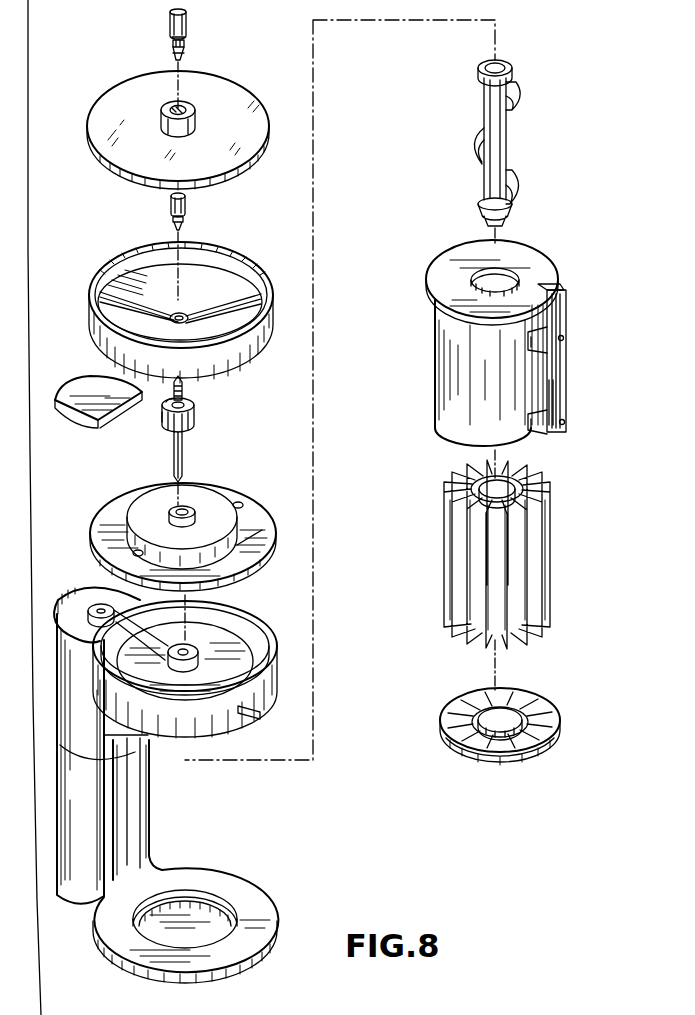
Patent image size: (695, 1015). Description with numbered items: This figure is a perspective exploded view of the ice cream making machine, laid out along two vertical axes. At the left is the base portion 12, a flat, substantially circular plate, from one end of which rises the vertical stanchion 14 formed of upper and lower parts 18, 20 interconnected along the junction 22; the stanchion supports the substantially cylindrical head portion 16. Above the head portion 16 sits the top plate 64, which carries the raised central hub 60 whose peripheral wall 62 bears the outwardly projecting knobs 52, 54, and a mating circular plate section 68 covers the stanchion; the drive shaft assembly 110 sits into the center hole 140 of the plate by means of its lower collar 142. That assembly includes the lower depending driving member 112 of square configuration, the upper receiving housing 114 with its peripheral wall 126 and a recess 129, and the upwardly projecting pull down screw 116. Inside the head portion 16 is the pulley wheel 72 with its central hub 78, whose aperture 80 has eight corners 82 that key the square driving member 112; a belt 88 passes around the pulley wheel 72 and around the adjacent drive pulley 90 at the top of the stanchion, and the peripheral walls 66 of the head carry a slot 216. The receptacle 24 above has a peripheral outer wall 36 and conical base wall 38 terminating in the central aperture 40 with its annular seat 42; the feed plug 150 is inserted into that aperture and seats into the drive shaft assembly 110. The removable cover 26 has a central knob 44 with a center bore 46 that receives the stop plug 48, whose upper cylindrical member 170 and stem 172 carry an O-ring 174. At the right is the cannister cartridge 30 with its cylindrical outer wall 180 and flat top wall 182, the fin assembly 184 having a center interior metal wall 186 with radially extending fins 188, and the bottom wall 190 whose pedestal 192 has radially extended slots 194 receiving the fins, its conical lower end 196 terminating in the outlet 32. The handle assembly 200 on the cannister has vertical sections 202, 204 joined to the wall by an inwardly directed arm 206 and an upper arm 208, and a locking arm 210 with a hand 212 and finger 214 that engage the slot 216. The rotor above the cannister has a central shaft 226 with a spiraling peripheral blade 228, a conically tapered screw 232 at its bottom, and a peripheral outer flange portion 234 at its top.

The base portion 12 is at (226, 887).
The vertical stanchion 14 is at (158, 798).
The head portion 16 is at (176, 661).
The upper part of stanchion 18 is at (132, 742).
The lower part of stanchion 20 is at (142, 800).
The junction 22 is at (140, 768).
The receptacle 24 is at (199, 302).
The removable cover 26 is at (191, 121).
The cannister cartridge 30 is at (501, 334).
The outlet 32 is at (526, 727).
The peripheral outer wall 36 is at (222, 262).
The conical base wall 38 is at (222, 292).
The central aperture 40 is at (182, 312).
The annular seat 42 is at (176, 314).
The central knob 44 is at (220, 94).
The center bore 46 is at (183, 107).
The stop plug 48 is at (180, 35).
The outwardly projecting knob 52 is at (180, 528).
The outwardly projecting knob 54 is at (133, 553).
The raised central hub 60 is at (208, 500).
The peripheral wall 62 is at (246, 557).
The top plate 64 is at (265, 530).
The peripheral walls 66 is at (277, 663).
The circular plate section 68 is at (96, 379).
The pulley wheel 72 is at (200, 640).
The central hub 78 is at (226, 636).
The aperture 80 is at (215, 651).
The corners 82 is at (180, 655).
The belt 88 is at (114, 606).
The drive pulley 90 is at (72, 602).
The drive shaft assembly 110 is at (208, 425).
The lower depending driving member 112 is at (186, 461).
The upper receiving housing 114 is at (168, 433).
The pull down screw 116 is at (184, 394).
The peripheral wall 126 is at (196, 411).
The collar opening 129 is at (166, 402).
The center hole 140 is at (174, 512).
The lower collar 142 is at (195, 424).
The feed plug 150 is at (190, 207).
The upper cylindrical member 170 is at (171, 26).
The stem 172 is at (172, 48).
The O-ring 174 is at (186, 46).
The cylindrical outer wall 180 is at (452, 392).
The flat top wall 182 is at (532, 250).
The fin assembly 184 is at (536, 553).
The center interior metal wall 186 is at (526, 482).
The radially extending fins 188 is at (560, 546).
The bottom wall 190 is at (542, 760).
The pedestal 192 is at (550, 713).
The radially extended slots 194 is at (530, 728).
The conical lower end 196 is at (508, 716).
The handle assembly 200 is at (578, 360).
The vertical section 202 is at (568, 367).
The vertical section 204 is at (553, 388).
The inwardly directed arm 206 is at (534, 434).
The arm 208 is at (548, 350).
The locking arm 210 is at (564, 305).
The hand 212 is at (561, 289).
The finger 214 is at (522, 278).
The slot 216 is at (261, 716).
The central shaft 226 is at (491, 138).
The peripheral blade 228 is at (515, 90).
The conically tapered screw 232 is at (480, 206).
The peripheral outer flange portion 234 is at (510, 67).